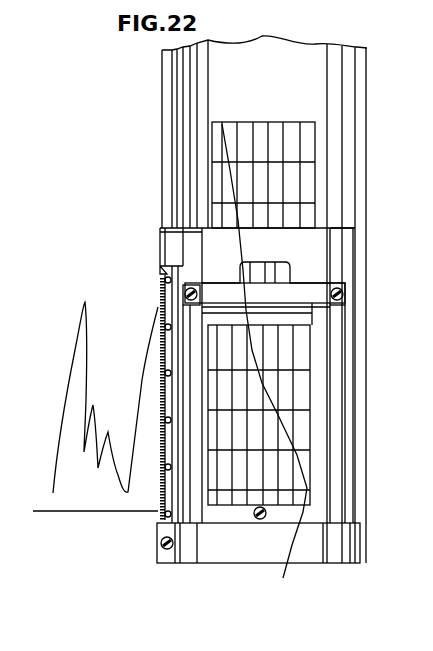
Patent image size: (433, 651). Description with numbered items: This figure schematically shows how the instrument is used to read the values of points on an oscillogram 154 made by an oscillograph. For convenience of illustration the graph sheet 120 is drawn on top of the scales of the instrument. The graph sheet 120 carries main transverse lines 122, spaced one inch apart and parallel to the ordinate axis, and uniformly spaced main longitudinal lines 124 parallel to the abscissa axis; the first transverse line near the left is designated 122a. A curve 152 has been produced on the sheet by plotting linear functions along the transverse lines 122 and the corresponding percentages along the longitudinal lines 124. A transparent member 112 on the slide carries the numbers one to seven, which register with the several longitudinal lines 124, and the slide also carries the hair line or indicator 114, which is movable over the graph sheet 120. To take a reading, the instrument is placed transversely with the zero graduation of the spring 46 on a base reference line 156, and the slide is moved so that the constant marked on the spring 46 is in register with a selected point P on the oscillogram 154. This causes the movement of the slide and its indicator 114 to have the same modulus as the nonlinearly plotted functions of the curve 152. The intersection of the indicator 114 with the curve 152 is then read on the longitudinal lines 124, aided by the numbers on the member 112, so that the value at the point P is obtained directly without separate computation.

The graph sheet 120 is at (316, 178).
The main longitudinal lines 124 is at (288, 138).
The transparent member 112 is at (340, 283).
The hair line 114 is at (292, 296).
The curve 152 is at (275, 400).
The main transverse lines 122 is at (300, 447).
The first transverse line 122a is at (264, 362).
The spring 46 is at (160, 290).
The selected point P is at (157, 328).
The oscillogram 154 is at (88, 365).
The base reference line 156 is at (67, 512).